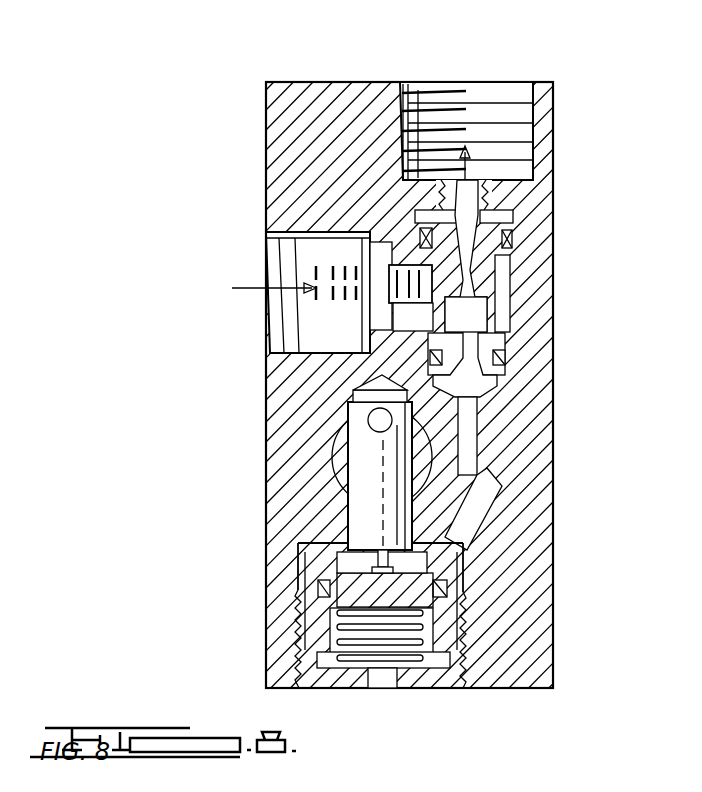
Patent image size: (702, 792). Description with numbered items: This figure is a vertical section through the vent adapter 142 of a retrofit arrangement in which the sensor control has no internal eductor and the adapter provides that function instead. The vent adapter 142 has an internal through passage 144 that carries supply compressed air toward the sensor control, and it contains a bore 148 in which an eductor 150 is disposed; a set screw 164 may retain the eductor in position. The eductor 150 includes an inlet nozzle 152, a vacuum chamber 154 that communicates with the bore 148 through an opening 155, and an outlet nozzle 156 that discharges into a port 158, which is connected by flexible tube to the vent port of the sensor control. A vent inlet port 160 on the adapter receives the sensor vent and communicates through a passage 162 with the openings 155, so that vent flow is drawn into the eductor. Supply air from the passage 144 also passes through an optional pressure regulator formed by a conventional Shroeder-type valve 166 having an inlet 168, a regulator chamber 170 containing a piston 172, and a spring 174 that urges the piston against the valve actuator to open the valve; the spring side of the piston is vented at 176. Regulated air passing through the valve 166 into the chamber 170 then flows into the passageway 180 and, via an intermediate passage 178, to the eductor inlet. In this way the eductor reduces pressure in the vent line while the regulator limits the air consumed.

The vent adapter 142 is at (280, 436).
The internal through passage 144 is at (336, 450).
The bore 148 is at (510, 318).
The eductor 150 is at (432, 255).
The inlet nozzle 152 is at (505, 358).
The vacuum chamber 154 is at (510, 305).
The opening 155 is at (510, 325).
The outlet nozzle 156 is at (492, 208).
The port 158 is at (520, 78).
The vent inlet port 160 is at (280, 353).
The passage 162 is at (432, 320).
The set screw 164 is at (390, 272).
The Shroeder-type valve 166 is at (365, 478).
The inlet 168 is at (368, 418).
The regulator chamber 170 is at (315, 545).
The piston 172 is at (298, 622).
The spring 174 is at (345, 668).
The vent 176 is at (395, 682).
The intermediate passage 178 is at (478, 517).
The passageway 180 is at (480, 432).